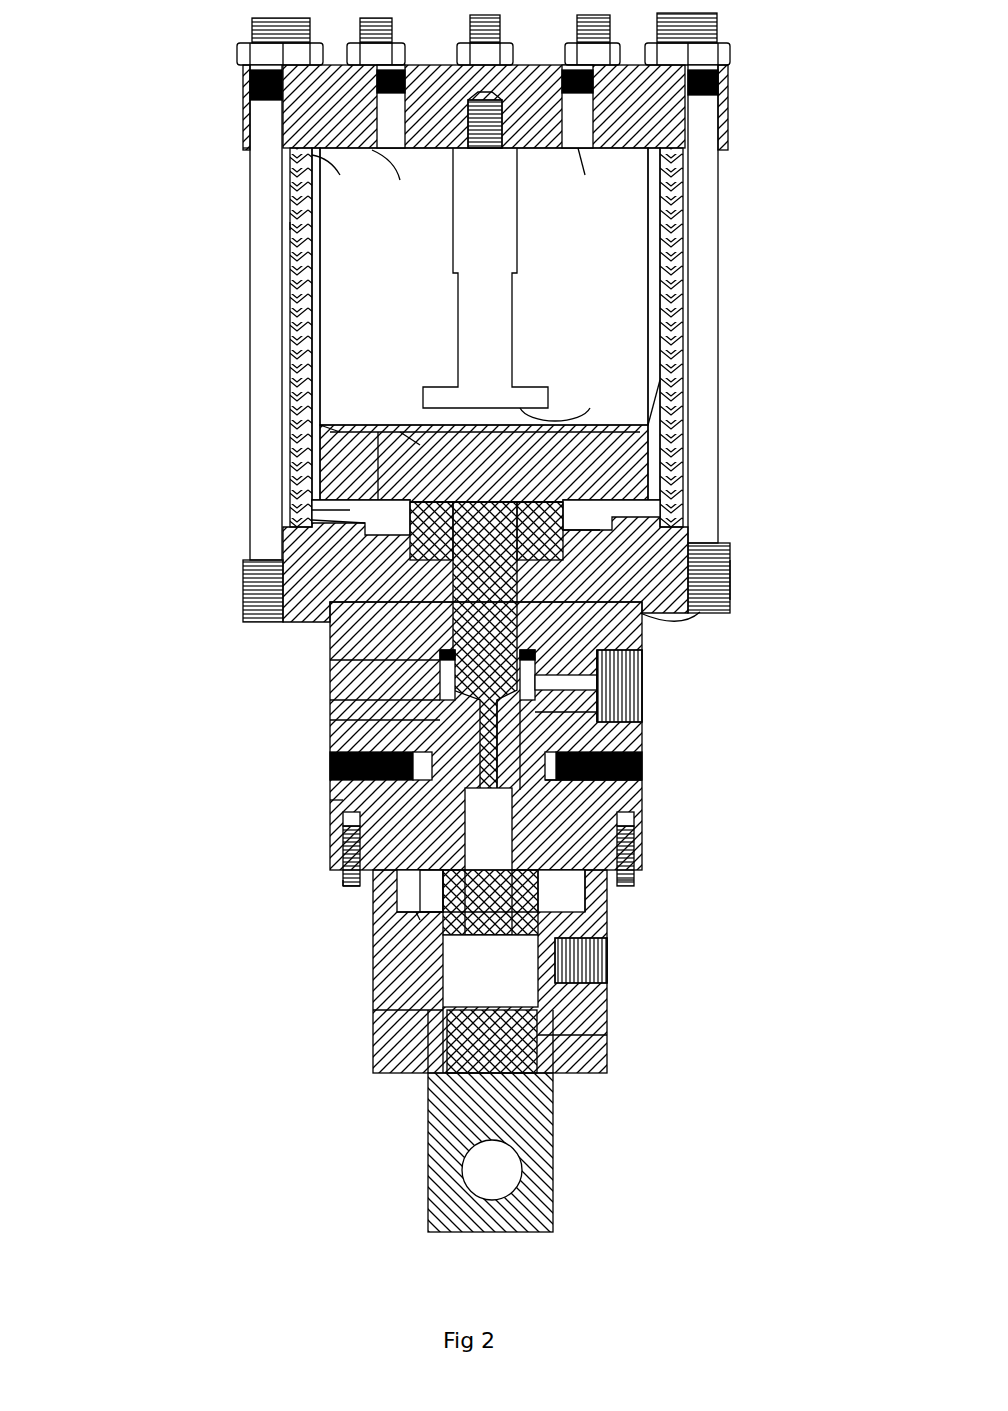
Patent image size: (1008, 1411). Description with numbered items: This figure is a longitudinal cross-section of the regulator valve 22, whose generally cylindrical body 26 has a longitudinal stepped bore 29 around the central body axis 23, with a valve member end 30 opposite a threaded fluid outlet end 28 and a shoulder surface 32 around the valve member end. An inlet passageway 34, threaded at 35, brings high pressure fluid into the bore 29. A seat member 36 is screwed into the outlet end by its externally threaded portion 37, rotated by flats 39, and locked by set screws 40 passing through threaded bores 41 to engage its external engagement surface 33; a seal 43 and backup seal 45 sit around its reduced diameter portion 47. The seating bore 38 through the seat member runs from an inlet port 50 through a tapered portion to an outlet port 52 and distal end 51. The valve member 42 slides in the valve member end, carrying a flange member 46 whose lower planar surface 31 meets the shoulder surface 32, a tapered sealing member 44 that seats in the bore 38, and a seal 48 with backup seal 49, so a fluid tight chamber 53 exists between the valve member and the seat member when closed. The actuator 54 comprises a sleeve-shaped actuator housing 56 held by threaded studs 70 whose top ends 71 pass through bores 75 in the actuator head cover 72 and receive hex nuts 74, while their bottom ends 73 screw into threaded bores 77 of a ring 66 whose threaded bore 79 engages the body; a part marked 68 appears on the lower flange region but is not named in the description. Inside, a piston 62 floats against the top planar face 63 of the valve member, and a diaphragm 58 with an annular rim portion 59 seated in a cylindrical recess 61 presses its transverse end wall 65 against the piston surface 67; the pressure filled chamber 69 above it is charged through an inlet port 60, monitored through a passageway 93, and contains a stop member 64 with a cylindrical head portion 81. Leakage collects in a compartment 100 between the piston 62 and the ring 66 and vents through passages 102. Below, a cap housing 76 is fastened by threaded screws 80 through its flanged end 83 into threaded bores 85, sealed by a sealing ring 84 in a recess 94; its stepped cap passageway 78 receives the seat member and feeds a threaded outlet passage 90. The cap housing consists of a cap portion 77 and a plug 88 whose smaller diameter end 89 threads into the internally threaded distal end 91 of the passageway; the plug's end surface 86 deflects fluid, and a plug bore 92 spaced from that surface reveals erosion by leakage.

The regulator valve 22 is at (180, 127).
The central body axis 23 is at (668, 375).
The body 26 is at (330, 632).
The fluid outlet end 28 is at (415, 905).
The longitudinal stepped bore 29 is at (330, 700).
The valve member end 30 is at (660, 545).
The lower planar surface 31 is at (430, 648).
The shoulder surface 32 is at (670, 470).
The external engagement surface 33 is at (335, 800).
The inlet passageway 34 is at (645, 712).
The threaded portion of inlet passageway 35 is at (642, 680).
The seat member 36 is at (610, 915).
The externally threaded portion 37 is at (635, 870).
The seating bore 38 is at (488, 861).
The flats 39 is at (430, 912).
The set screws 40 is at (640, 800).
The threaded bore 41 is at (642, 785).
The valve member 42 is at (600, 638).
The seal 43 is at (330, 763).
The sealing member 44 is at (330, 742).
The backup seal 45 is at (645, 768).
The flange member 46 is at (670, 510).
The reduced diameter portion 47 is at (590, 830).
The seal 48 is at (330, 662).
The backup seal 49 is at (645, 700).
The inlet port 50 is at (645, 745).
The distal end of seating bore 51 is at (490, 971).
The outlet port 52 is at (345, 835).
The chamber 53 is at (330, 722).
The actuator 54 is at (215, 222).
The actuator housing 56 is at (290, 193).
The diaphragm 58 is at (322, 253).
The annular rim portion 59 is at (338, 181).
The inlet port 60 is at (396, 180).
The cylindrical recess 61 is at (645, 160).
The piston 62 is at (305, 478).
The top planar face 63 is at (415, 436).
The stop member 64 is at (517, 238).
The transverse end wall 65 is at (378, 428).
The ring 66 is at (732, 575).
The surface of piston 67 is at (350, 425).
The base plate 68 is at (262, 603).
The pressure filled chamber 69 is at (484, 286).
The threaded studs 70 is at (720, 205).
The top end of stud 71 is at (250, 85).
The actuator head cover 72 is at (730, 87).
The bottom end of stud 73 is at (300, 572).
The hex nuts 74 is at (735, 45).
The bore in head cover 75 is at (690, 137).
The cap housing 76 is at (415, 992).
The cap portion 77 is at (735, 583).
The cap passageway 78 is at (490, 920).
The internally threaded bore of ring 79 is at (700, 615).
The threaded screws 80 is at (340, 886).
The cylindrical head portion 81 is at (575, 418).
The flanged end 83 is at (330, 862).
The sealing ring 84 is at (343, 882).
The threaded bore 85 is at (635, 855).
The end surface 86 is at (435, 1012).
The plug 88 is at (430, 1165).
The smaller diameter end 89 is at (615, 1035).
The outlet passage 90 is at (608, 965).
The internally threaded distal end 91 is at (555, 1100).
The plug bore 92 is at (522, 1172).
The passageway 93 is at (589, 174).
The recess 94 is at (610, 895).
The compartment 100 is at (312, 512).
The passages 102 is at (330, 516).